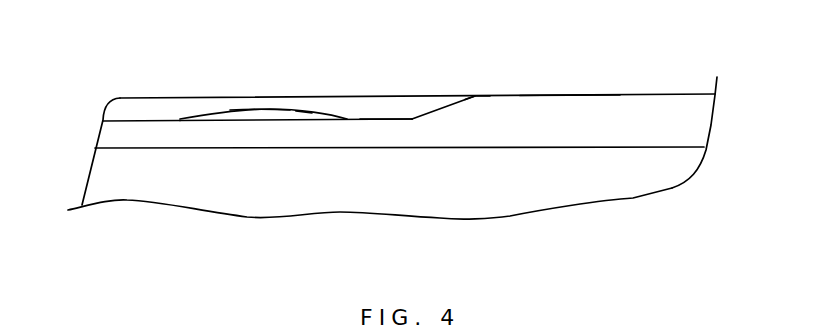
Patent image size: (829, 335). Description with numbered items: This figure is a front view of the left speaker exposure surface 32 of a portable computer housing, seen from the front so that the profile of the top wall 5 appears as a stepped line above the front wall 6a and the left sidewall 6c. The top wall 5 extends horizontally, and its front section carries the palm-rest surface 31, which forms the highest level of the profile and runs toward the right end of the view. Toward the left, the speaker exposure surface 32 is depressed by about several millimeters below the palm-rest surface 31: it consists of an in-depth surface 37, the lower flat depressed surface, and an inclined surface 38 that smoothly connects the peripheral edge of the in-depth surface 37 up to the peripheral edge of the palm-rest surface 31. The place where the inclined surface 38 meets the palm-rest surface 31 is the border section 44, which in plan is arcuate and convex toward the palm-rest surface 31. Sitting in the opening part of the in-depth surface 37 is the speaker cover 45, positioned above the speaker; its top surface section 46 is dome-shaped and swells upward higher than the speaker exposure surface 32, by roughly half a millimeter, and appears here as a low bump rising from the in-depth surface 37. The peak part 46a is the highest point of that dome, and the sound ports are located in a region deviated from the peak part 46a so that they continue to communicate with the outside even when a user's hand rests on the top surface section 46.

The top wall 5 is at (640, 94).
The palm-rest surface 31 is at (562, 94).
The front wall 6a is at (700, 120).
The sidewall 6c is at (83, 178).
The in-depth surface 37 is at (145, 120).
The top surface section 46 is at (227, 117).
The peak part 46a is at (252, 112).
The speaker cover 45 is at (308, 93).
The speaker exposure surface 32 is at (387, 99).
The inclined surface 38 is at (440, 108).
The border section 44 is at (477, 96).